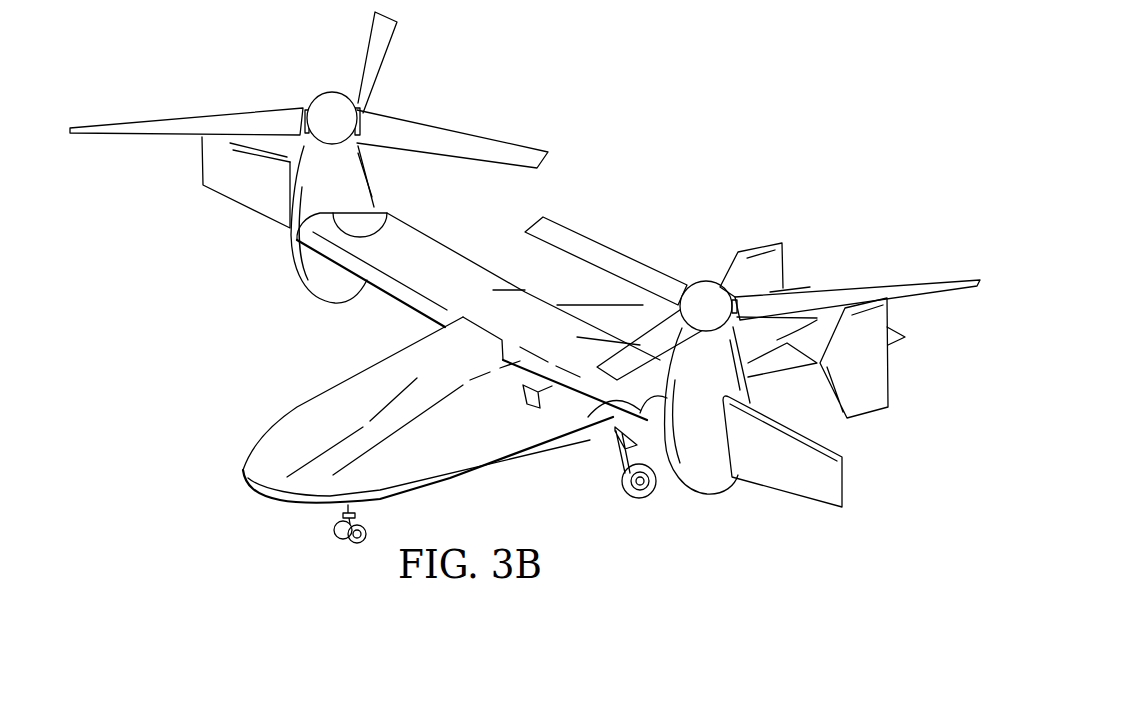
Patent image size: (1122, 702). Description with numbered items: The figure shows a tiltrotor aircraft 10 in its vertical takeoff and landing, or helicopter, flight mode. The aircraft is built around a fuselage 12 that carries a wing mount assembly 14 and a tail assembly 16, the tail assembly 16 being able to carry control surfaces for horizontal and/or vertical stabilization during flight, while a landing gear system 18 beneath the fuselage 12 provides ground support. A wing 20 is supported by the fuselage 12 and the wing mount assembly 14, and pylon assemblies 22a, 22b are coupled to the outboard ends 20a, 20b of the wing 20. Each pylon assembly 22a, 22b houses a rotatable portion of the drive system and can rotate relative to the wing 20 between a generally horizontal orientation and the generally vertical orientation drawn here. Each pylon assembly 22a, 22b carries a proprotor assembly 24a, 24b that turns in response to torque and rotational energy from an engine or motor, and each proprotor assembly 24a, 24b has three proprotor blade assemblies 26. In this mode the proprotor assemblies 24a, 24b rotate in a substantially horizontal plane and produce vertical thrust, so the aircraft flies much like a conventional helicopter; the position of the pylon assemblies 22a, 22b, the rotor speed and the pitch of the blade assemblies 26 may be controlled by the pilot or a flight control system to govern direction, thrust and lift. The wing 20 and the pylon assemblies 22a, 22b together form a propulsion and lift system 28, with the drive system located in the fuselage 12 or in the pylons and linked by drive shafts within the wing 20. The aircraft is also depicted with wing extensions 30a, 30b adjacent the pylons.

The tiltrotor aircraft 10 is at (672, 144).
The fuselage 12 is at (287, 422).
The wing mount assembly 14 is at (463, 337).
The tail assembly 16 is at (760, 250).
The landing gear system 18 is at (353, 545).
The wing 20 is at (528, 313).
The outboard end of wing 20a is at (600, 408).
The outboard end of wing 20b is at (375, 218).
The pylon assembly 22a is at (703, 494).
The pylon assembly 22b is at (318, 303).
The proprotor assembly 24a is at (700, 282).
The proprotor assembly 24b is at (328, 92).
The proprotor blade assembly 26 is at (158, 120).
The propulsion and lift system 28 is at (460, 294).
The nacelle fin 30a is at (846, 466).
The nacelle fin 30b is at (233, 192).